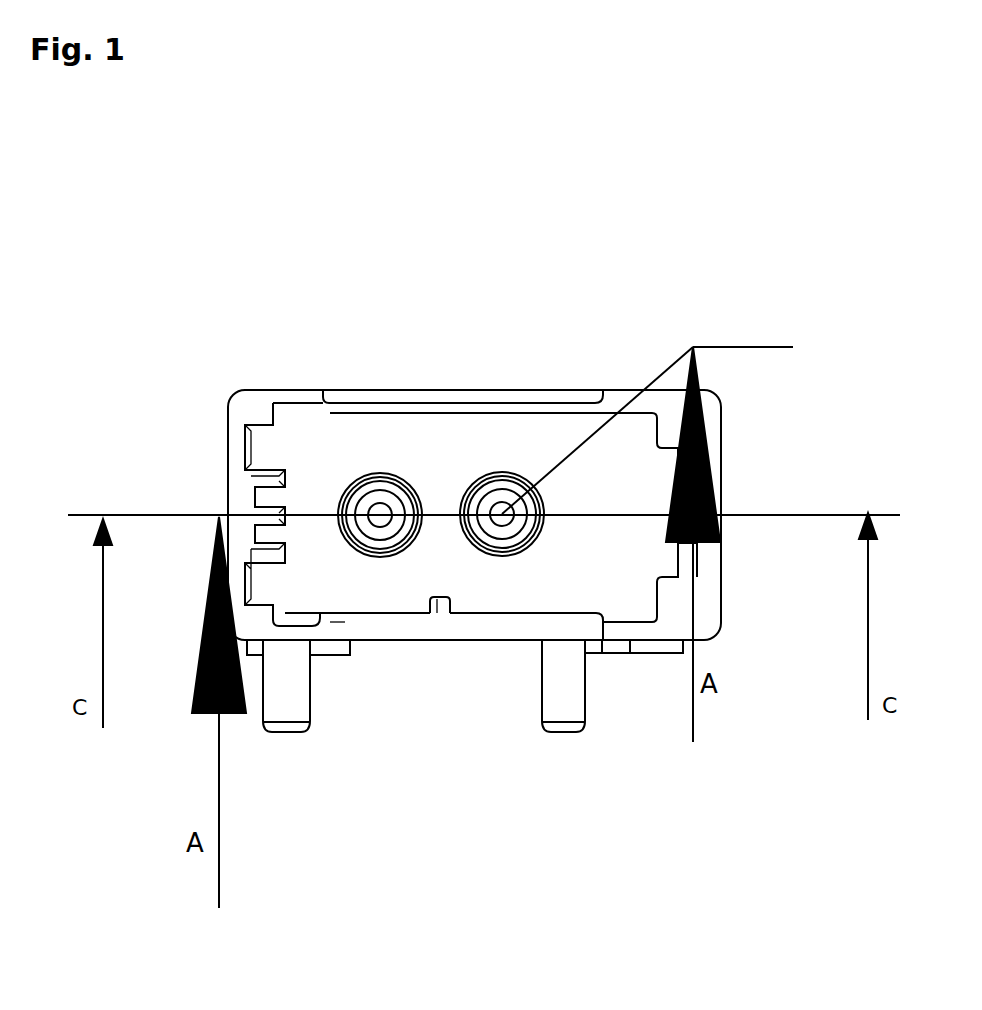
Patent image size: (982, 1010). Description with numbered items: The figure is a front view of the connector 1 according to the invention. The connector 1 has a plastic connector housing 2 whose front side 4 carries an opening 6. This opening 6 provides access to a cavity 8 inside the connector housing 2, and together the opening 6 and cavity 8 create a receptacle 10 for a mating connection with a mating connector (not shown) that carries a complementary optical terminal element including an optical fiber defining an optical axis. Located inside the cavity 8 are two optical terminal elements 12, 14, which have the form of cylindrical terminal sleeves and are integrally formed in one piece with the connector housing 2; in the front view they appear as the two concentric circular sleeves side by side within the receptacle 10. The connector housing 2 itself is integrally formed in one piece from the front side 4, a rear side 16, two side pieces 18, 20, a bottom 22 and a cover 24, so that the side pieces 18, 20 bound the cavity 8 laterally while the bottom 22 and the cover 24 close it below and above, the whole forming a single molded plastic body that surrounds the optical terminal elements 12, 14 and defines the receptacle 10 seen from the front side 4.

The connector 1 is at (597, 297).
The connector housing 2 is at (722, 415).
The front side 4 is at (702, 598).
The opening 6 is at (407, 587).
The cavity 8 is at (355, 588).
The receptacle 10 is at (355, 437).
The optical terminal element 12 is at (500, 472).
The optical terminal element 14 is at (403, 475).
The rear side 16 is at (543, 583).
The side piece 18 is at (723, 574).
The side piece 20 is at (226, 457).
The bottom 22 is at (475, 642).
The cover 24 is at (472, 388).